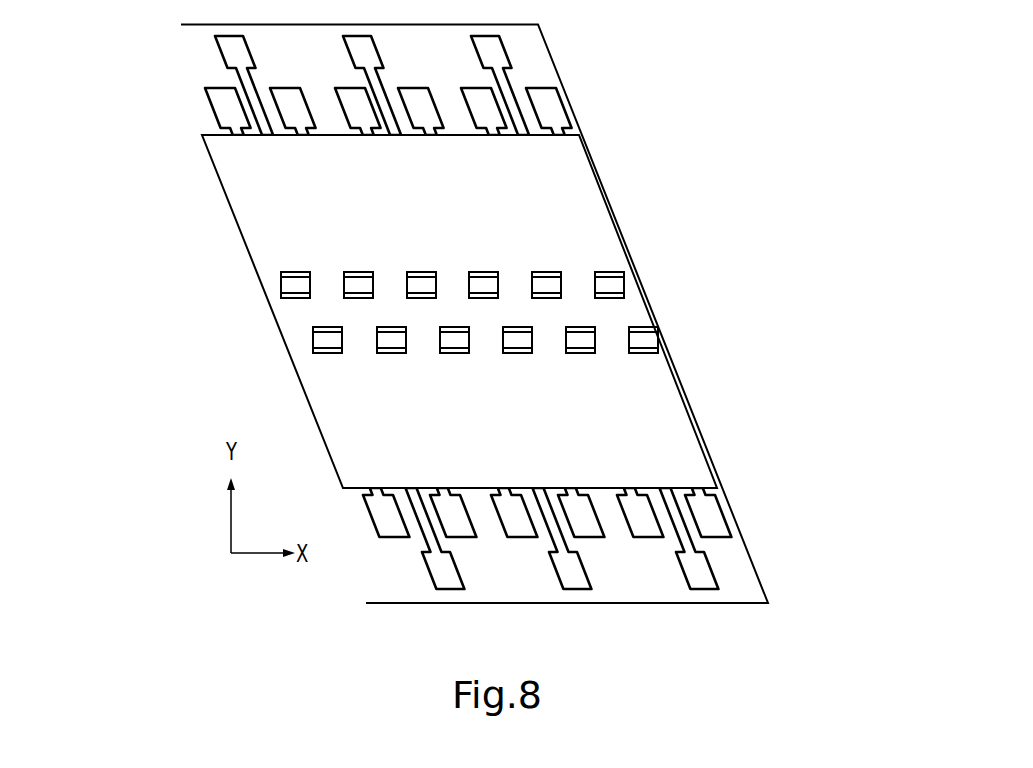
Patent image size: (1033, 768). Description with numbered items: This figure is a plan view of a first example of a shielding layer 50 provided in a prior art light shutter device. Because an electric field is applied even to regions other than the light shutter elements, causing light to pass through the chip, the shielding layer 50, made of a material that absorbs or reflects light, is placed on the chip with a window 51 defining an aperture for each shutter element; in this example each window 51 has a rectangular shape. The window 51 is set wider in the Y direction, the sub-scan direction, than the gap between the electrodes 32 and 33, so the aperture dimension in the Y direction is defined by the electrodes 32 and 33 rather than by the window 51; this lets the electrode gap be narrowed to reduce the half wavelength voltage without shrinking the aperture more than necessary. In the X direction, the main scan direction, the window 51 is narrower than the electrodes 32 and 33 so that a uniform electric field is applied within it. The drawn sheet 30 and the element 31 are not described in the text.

The tape carrier substrate 30 is at (560, 51).
The chip component 31 is at (602, 285).
The electrode 32 is at (613, 300).
The electrode 33 is at (604, 271).
The shielding layer 50 is at (566, 170).
The window 51 is at (622, 283).